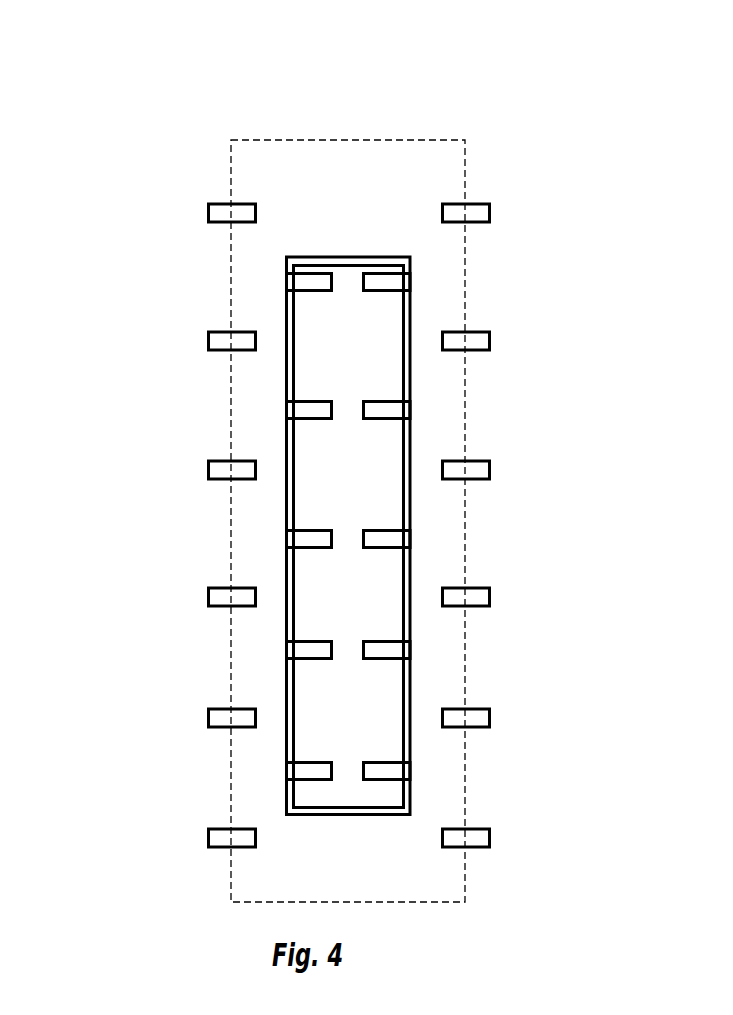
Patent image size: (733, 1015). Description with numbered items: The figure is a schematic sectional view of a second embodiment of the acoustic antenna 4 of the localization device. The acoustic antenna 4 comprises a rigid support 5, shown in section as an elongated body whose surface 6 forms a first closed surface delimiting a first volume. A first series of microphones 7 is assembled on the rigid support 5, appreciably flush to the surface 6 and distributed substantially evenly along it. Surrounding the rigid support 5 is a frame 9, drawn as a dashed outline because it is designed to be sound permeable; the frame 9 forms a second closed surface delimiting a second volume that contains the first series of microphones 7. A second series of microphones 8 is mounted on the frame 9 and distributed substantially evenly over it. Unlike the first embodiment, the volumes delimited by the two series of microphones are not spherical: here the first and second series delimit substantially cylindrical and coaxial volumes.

The acoustic antenna 4 is at (95, 113).
The rigid support 5 is at (286, 383).
The surface of the rigid support 6 is at (411, 440).
The first series of microphones 7 is at (413, 282).
The second series of microphones 8 is at (490, 203).
The frame 9 is at (232, 277).